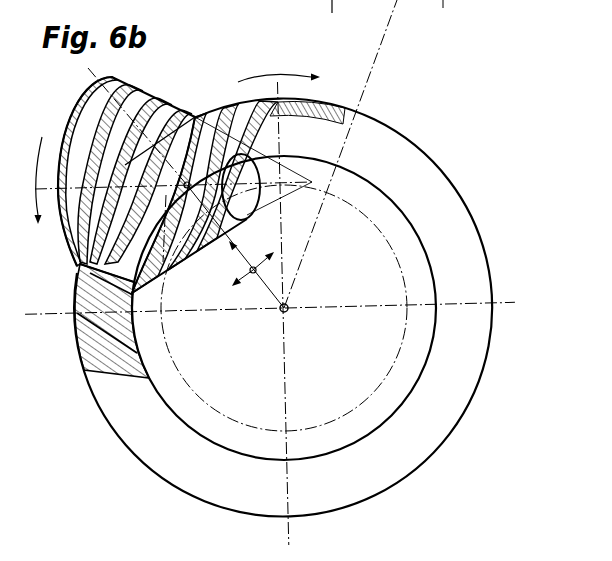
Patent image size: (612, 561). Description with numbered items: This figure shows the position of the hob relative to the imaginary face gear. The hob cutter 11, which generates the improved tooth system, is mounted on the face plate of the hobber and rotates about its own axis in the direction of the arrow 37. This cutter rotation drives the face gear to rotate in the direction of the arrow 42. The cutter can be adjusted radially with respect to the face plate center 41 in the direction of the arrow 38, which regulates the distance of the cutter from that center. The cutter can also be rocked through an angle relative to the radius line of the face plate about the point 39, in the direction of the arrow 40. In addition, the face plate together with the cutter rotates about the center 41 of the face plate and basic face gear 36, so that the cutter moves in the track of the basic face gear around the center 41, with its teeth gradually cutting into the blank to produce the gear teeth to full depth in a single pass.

The hob cutter 11 is at (85, 102).
The basic face gear 36 is at (388, 142).
The arrow indicating direction of cutter rotation 37 is at (27, 180).
The arrow indicating direction of radial adjustment 38 is at (251, 252).
The rocking point 39 is at (192, 177).
The arrow indicating direction of rocking 40 is at (242, 285).
The face plate center 41 is at (247, 257).
The arrow indicating direction of face gear rotation 42 is at (279, 72).